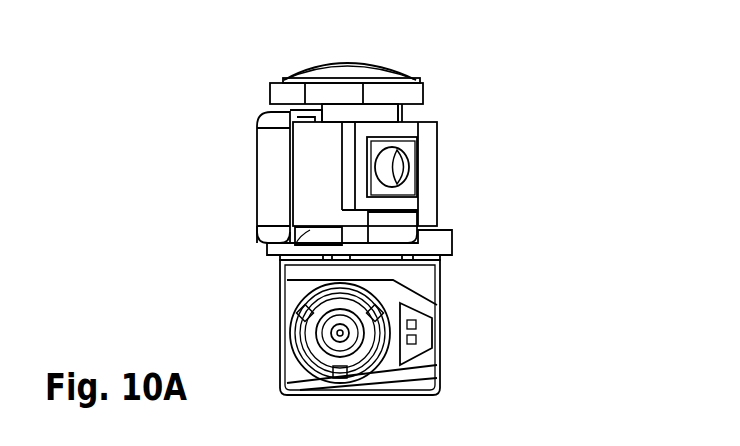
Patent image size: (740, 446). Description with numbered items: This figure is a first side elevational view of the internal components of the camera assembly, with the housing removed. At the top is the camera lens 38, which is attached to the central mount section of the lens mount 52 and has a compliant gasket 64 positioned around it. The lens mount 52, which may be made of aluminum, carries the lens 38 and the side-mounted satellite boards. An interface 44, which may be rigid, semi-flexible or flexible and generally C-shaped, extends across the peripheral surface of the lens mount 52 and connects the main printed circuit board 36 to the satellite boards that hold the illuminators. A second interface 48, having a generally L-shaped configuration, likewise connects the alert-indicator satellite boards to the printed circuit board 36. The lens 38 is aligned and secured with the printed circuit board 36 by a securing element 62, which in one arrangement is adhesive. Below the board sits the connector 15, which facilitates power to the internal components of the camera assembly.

The connector 15 is at (458, 311).
The printed circuit board 36 is at (445, 238).
The camera lens 38 is at (350, 74).
The interface 44 is at (273, 190).
The second interface 48 is at (405, 218).
The lens mount 52 is at (428, 156).
The securing element 62 is at (292, 236).
The compliant gasket 64 is at (406, 78).